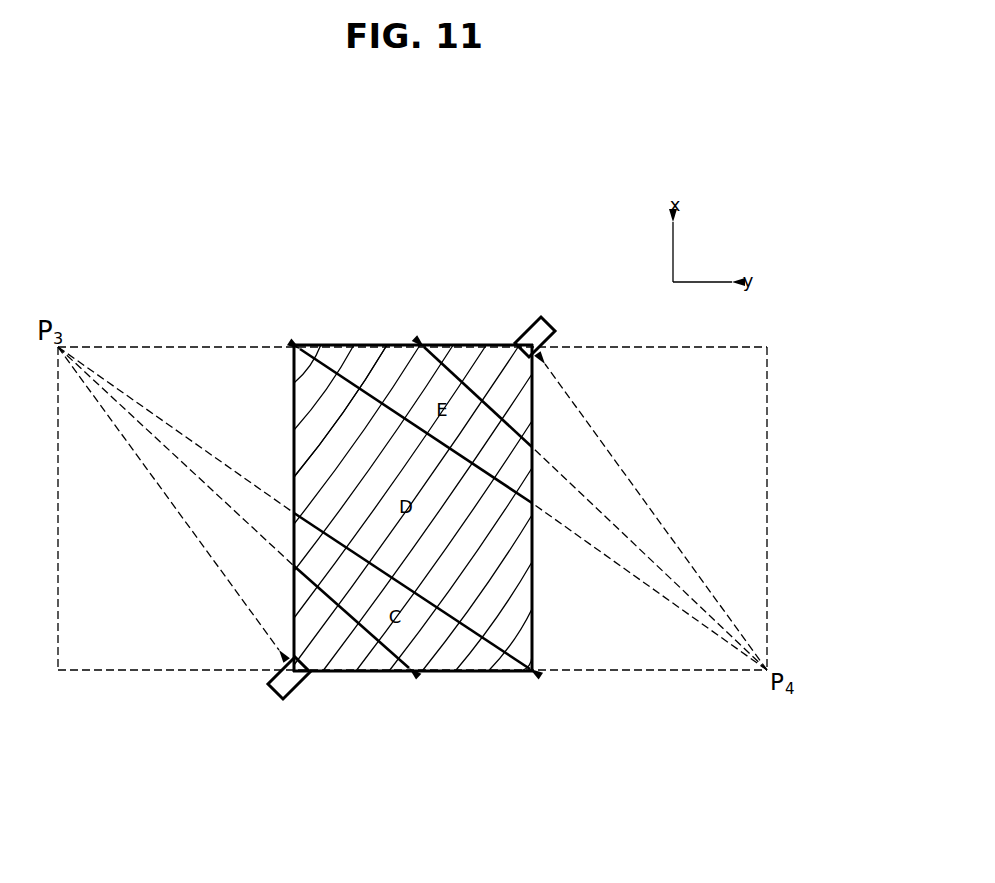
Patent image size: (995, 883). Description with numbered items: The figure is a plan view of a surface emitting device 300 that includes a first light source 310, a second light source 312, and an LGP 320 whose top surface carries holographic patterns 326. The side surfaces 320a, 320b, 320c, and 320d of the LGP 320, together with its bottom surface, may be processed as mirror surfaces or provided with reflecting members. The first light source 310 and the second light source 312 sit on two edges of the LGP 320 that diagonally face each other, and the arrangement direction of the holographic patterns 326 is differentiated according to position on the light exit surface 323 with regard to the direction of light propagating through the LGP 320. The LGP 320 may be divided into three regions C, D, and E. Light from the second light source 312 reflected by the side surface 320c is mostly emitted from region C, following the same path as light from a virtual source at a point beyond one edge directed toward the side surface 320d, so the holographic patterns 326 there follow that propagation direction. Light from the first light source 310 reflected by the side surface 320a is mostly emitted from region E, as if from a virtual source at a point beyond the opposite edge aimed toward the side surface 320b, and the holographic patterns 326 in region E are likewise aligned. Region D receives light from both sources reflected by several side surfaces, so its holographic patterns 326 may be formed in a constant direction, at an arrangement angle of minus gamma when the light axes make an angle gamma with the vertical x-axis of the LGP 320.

The surface emitting device 300 is at (518, 256).
The first light source 310 is at (284, 700).
The second light source 312 is at (543, 332).
The LGP 320 is at (428, 340).
The side surface 320a is at (534, 595).
The side surface 320b is at (335, 344).
The side surface 320c is at (292, 394).
The side surface 320d is at (433, 675).
The light exit surface 323 is at (388, 366).
The holographic patterns 326 is at (447, 643).